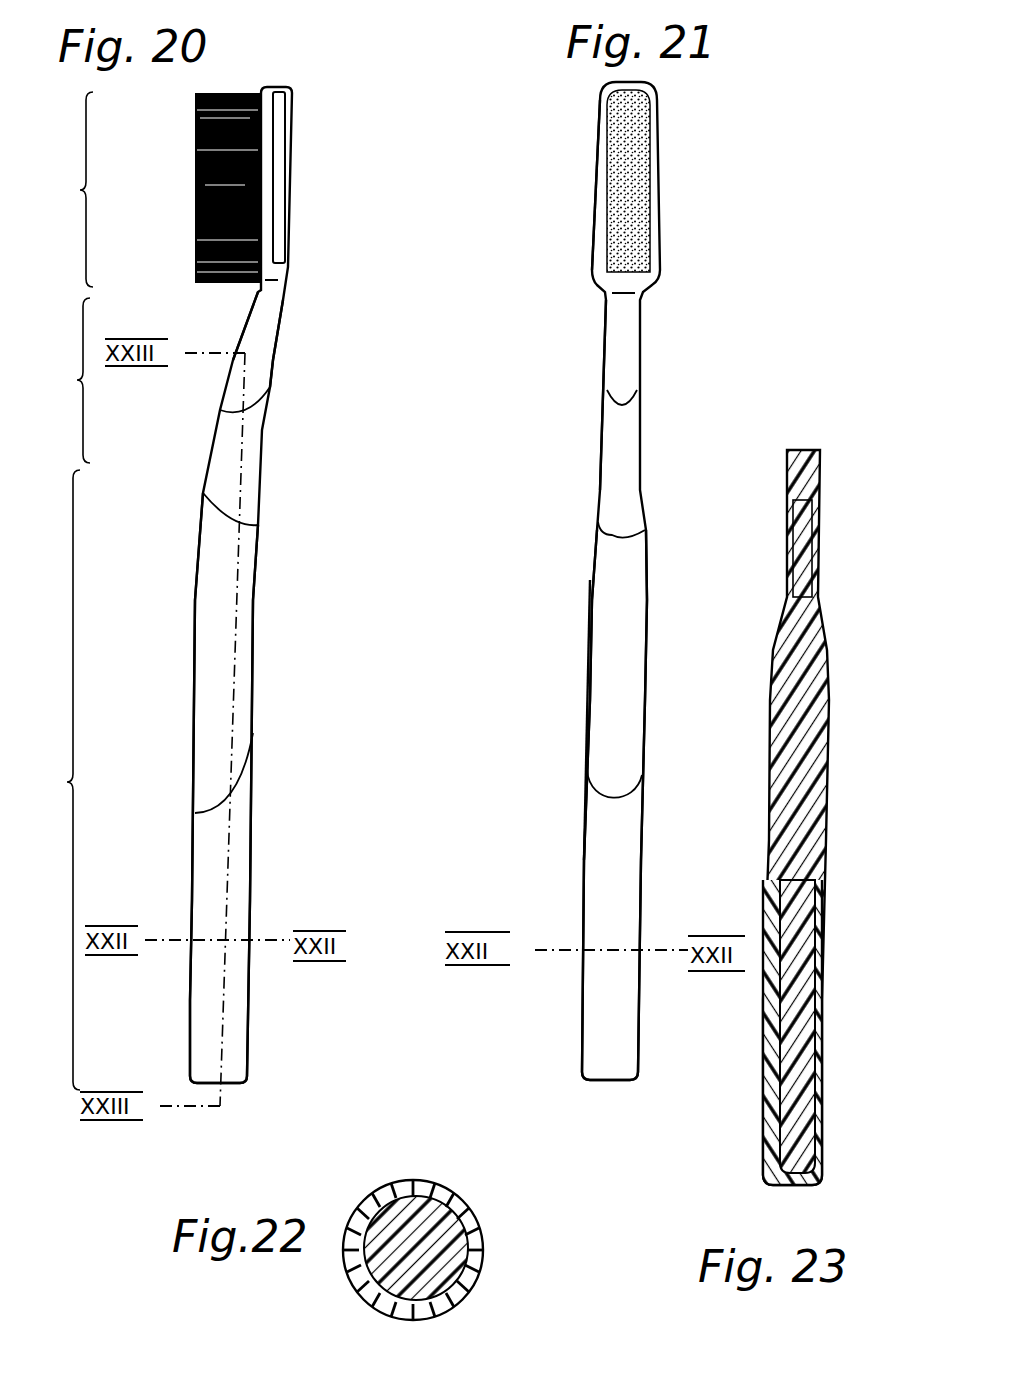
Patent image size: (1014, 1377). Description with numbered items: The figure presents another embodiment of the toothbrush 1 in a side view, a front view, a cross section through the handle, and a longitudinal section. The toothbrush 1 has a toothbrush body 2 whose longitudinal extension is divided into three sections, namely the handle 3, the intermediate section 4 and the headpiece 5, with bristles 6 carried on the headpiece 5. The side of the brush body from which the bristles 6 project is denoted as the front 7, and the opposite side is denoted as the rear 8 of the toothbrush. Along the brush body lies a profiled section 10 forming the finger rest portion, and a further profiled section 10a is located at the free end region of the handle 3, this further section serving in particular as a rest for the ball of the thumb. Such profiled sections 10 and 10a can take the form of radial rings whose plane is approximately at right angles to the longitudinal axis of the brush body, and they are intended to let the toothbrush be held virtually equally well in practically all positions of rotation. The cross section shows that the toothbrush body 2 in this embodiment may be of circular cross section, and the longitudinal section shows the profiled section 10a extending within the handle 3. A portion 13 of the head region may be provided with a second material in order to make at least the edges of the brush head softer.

In FIG. 20, the toothbrush 1 is at (304, 252).
In FIG. 21, the toothbrush 1 is at (590, 320).
In FIG. 20, the toothbrush body 2 is at (234, 645).
In FIG. 21, the toothbrush body 2 is at (628, 662).
In FIG. 22, the toothbrush body 2 is at (468, 1286).
In FIG. 23, the toothbrush body 2 is at (812, 752).
In FIG. 20, the handle 3 is at (65, 780).
In FIG. 21, the handle 3 is at (567, 765).
In FIG. 20, the section 4 is at (73, 380).
In FIG. 21, the section 4 is at (650, 352).
In FIG. 20, the headpiece 5 is at (76, 189).
In FIG. 21, the headpiece 5 is at (580, 186).
In FIG. 20, the bristles 6 is at (196, 145).
In FIG. 21, the bristles 6 is at (630, 208).
In FIG. 20, the front 7 is at (228, 316).
In FIG. 20, the rear 8 is at (290, 370).
In FIG. 20, the profiled section 10 is at (230, 462).
In FIG. 21, the profiled section 10 is at (622, 435).
In FIG. 23, the profiled section 10 is at (815, 542).
In FIG. 20, the further profiled section 10a is at (233, 892).
In FIG. 21, the further profiled section 10a is at (616, 896).
In FIG. 22, the further profiled section 10a is at (428, 1192).
In FIG. 23, the further profiled section 10a is at (820, 986).
In FIG. 20, the portion 13 is at (284, 178).